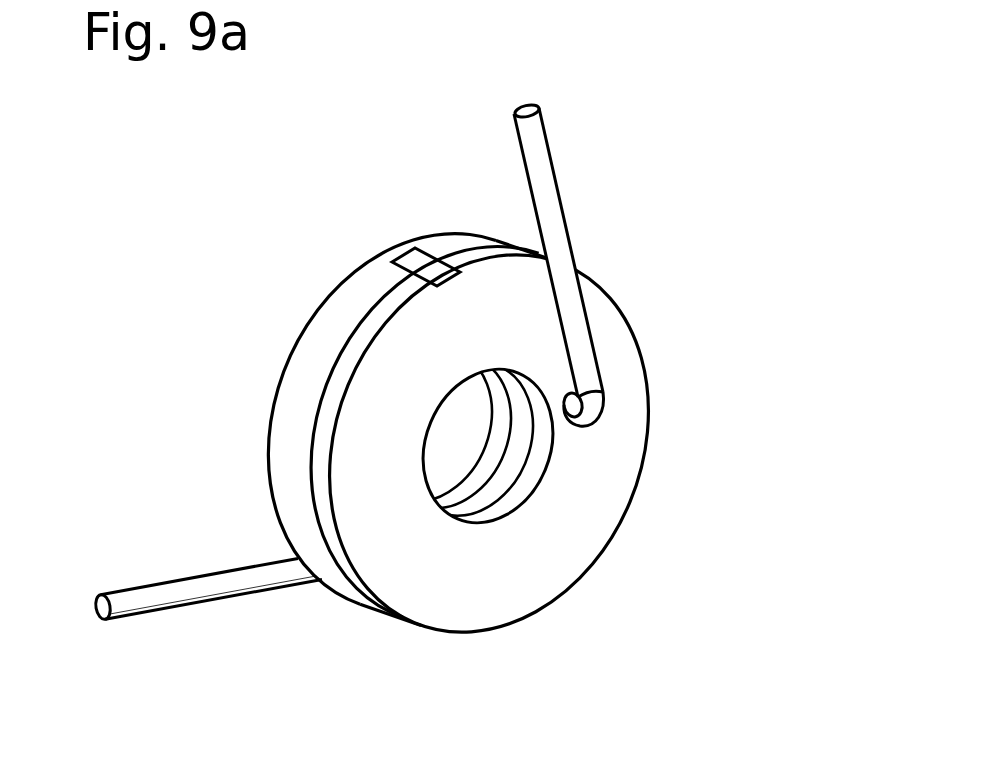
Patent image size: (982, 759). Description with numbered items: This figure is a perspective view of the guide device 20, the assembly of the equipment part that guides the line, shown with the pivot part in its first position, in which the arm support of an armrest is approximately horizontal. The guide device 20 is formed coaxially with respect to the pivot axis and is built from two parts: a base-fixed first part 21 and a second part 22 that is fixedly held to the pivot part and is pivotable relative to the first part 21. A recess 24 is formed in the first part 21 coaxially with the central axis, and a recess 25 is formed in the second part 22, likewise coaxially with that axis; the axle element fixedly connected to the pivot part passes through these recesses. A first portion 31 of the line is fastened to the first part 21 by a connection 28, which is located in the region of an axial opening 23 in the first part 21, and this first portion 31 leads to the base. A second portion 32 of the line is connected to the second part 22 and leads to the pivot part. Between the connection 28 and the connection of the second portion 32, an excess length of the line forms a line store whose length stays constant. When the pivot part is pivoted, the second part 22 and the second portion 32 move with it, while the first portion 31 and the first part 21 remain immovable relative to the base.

The guide device 20 is at (723, 253).
The first part 21 is at (622, 375).
The second part 22 is at (297, 388).
The axial opening 23 is at (572, 429).
The recess 24 is at (520, 480).
The recess 25 is at (463, 443).
The connection 28 is at (610, 427).
The first portion 31 is at (551, 212).
The second portion 32 is at (207, 590).